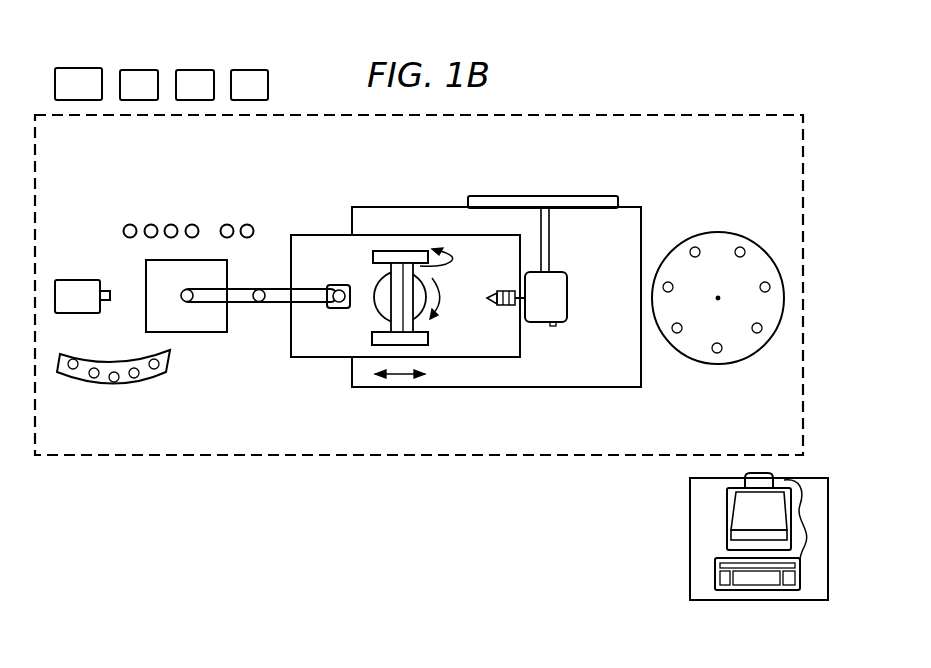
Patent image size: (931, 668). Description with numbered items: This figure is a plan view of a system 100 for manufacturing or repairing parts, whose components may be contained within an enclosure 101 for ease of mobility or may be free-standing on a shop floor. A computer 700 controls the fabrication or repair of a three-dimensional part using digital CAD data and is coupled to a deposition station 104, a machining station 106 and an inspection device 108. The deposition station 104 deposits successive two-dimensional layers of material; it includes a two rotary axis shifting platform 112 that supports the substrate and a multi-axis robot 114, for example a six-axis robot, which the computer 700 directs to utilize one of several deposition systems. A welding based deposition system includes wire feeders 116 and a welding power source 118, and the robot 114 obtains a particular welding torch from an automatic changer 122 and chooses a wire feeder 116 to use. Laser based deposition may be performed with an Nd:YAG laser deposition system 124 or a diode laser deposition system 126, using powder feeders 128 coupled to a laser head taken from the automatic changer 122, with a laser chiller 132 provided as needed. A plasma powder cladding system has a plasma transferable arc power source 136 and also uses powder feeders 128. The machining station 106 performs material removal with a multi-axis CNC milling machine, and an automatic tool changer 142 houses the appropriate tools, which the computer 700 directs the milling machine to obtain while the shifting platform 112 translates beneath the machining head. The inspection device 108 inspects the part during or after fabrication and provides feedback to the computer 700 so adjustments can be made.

The system 100 is at (609, 79).
The enclosure 101 is at (706, 114).
The deposition station 104 is at (246, 365).
The machining station 106 is at (577, 181).
The inspection device 108 is at (503, 306).
The two rotary axis shifting platform 112 is at (321, 358).
The multi-axis robot 114 is at (301, 288).
The wire feeders 116 is at (238, 219).
The welding power source 118 is at (194, 70).
The automatic changer 122 is at (103, 386).
The Nd:YAG laser deposition system 124 is at (75, 68).
The diode laser deposition system 126 is at (75, 280).
The powder feeders 128 is at (161, 219).
The laser chiller 132 is at (138, 70).
The plasma transferable arc power source 136 is at (249, 70).
The automatic tool changer 142 is at (746, 235).
The computer 700 is at (727, 528).